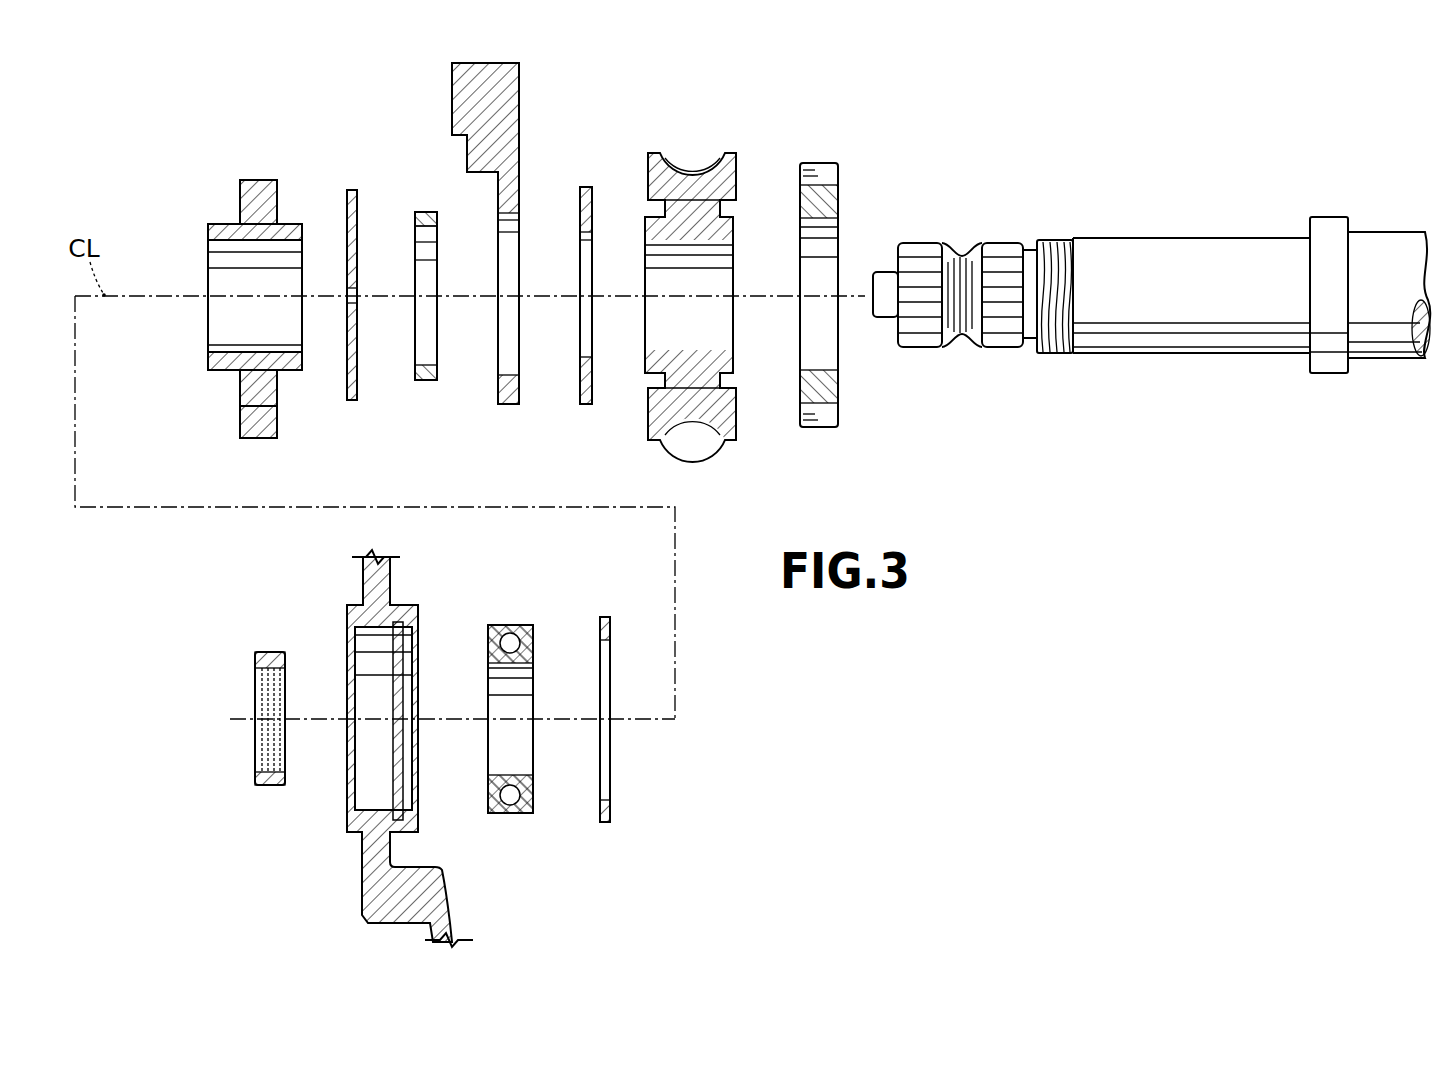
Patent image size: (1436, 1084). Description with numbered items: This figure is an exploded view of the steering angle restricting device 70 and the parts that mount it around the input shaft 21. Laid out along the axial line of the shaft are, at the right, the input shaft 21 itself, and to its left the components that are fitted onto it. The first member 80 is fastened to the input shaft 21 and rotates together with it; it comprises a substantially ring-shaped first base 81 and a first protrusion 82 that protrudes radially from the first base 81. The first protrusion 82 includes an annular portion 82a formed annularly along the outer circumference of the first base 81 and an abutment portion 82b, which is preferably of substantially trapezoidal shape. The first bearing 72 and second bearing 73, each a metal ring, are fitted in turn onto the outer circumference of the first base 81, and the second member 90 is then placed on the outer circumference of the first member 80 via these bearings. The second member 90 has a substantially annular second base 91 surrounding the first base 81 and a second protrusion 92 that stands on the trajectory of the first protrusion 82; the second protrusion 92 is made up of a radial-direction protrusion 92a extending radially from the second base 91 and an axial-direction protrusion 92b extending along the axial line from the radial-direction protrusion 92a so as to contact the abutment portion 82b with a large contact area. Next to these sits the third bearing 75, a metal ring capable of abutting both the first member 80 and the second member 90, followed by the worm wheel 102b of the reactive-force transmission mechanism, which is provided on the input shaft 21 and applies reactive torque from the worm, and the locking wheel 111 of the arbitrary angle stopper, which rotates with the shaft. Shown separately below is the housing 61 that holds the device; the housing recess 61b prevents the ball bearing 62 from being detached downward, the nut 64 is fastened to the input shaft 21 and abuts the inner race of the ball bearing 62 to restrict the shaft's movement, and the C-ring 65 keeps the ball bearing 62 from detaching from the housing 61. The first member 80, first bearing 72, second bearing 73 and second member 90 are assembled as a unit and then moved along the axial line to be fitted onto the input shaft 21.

The input shaft 21 is at (1213, 237).
The housing 61 is at (380, 926).
The housing recess 61b is at (378, 808).
The ball bearing 62 is at (513, 814).
The nut 64 is at (270, 787).
The C-ring 65 is at (610, 812).
The steering angle restricting device 70 is at (302, 98).
The first bearing 72 is at (351, 402).
The second bearing 73 is at (427, 381).
The third bearing 75 is at (587, 405).
The first member 80 is at (258, 175).
The first base 81 is at (230, 226).
The first protrusion 82 is at (151, 383).
The annular portion 82a is at (240, 391).
The abutment portion 82b is at (240, 423).
The second member 90 is at (524, 128).
The second base 91 is at (509, 405).
The second protrusion 92 is at (377, 75).
The radial-direction protrusion 92a is at (466, 158).
The axial-direction protrusion 92b is at (452, 105).
The worm wheel 102b is at (652, 152).
The locking wheel 111 is at (826, 165).